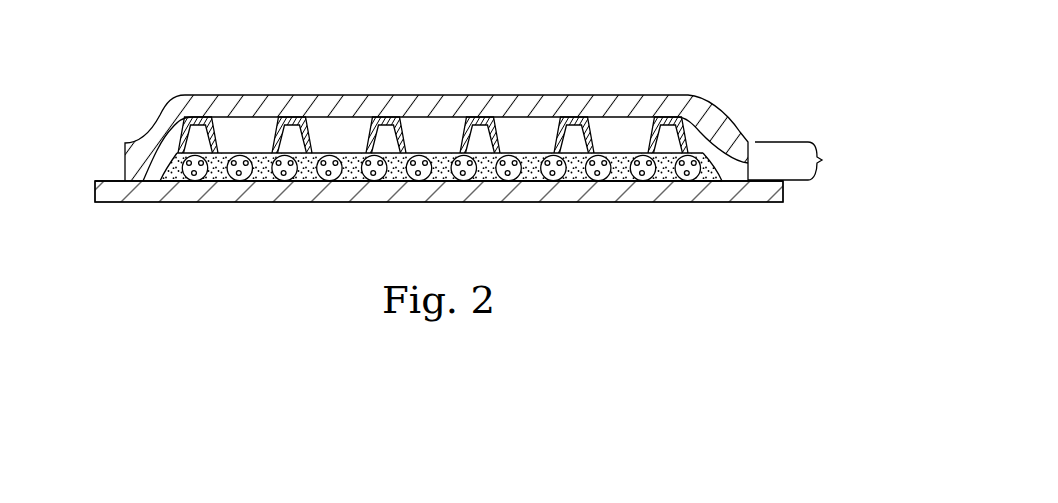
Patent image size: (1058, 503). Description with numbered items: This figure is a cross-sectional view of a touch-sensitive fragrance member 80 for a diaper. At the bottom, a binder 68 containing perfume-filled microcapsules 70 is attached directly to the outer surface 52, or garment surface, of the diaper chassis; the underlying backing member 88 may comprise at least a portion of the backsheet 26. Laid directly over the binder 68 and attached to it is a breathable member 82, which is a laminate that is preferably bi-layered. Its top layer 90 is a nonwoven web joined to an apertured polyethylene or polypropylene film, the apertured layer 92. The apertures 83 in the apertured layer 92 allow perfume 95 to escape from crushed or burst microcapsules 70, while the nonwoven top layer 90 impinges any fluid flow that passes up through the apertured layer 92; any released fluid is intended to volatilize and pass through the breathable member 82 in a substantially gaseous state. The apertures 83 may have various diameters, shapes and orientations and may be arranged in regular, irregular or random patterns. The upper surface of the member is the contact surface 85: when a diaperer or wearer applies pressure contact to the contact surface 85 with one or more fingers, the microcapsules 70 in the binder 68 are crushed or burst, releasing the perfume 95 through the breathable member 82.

The touch-sensitive fragrance member 80 is at (677, 41).
The contact surface 85 is at (543, 94).
The top layer 90 is at (716, 120).
The breathable member 82 is at (803, 161).
The apertures 83 is at (252, 133).
The outer surface 52 is at (107, 181).
The backing member 88 is at (247, 197).
The backsheet 26 is at (357, 197).
The binder 68 is at (487, 174).
The perfume 95 is at (560, 174).
The microcapsules 70 is at (652, 178).
The apertured layer 92 is at (732, 167).